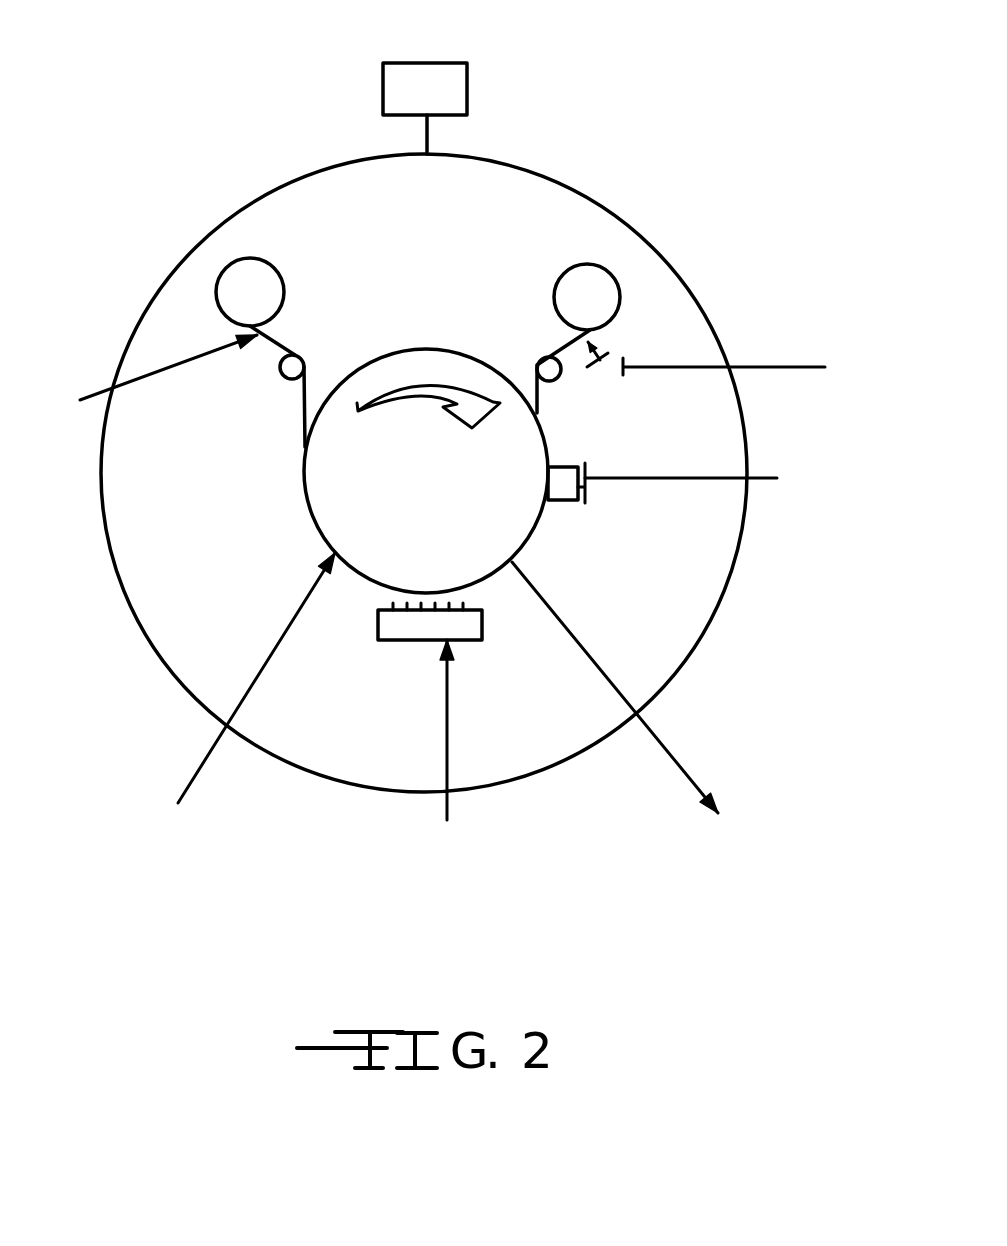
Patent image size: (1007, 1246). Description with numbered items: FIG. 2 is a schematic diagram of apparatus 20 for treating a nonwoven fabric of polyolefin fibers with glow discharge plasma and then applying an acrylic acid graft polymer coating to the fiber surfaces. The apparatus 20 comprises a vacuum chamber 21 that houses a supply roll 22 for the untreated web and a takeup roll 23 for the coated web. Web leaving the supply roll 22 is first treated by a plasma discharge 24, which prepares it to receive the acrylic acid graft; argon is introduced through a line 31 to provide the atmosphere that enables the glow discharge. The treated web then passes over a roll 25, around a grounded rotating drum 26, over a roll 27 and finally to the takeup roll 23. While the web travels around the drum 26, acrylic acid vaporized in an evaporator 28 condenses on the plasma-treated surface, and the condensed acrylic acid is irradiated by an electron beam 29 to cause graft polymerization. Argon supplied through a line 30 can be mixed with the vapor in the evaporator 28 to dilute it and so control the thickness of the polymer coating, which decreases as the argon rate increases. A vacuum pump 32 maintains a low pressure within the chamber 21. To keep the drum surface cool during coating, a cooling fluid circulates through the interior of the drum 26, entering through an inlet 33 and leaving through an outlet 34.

The apparatus 20 is at (160, 165).
The vacuum chamber 21 is at (349, 212).
The supply roll 22 is at (600, 265).
The takeup roll 23 is at (283, 277).
The plasma discharge 24 is at (622, 342).
The roll 25 is at (555, 380).
The grounded rotating drum 26 is at (410, 350).
The roll 27 is at (285, 378).
The evaporator 28 is at (597, 473).
The electron beam 29 is at (447, 810).
The line 30 is at (768, 477).
The line 31 is at (808, 367).
The vacuum pump 32 is at (467, 80).
The inlet 33 is at (205, 763).
The outlet 34 is at (678, 760).